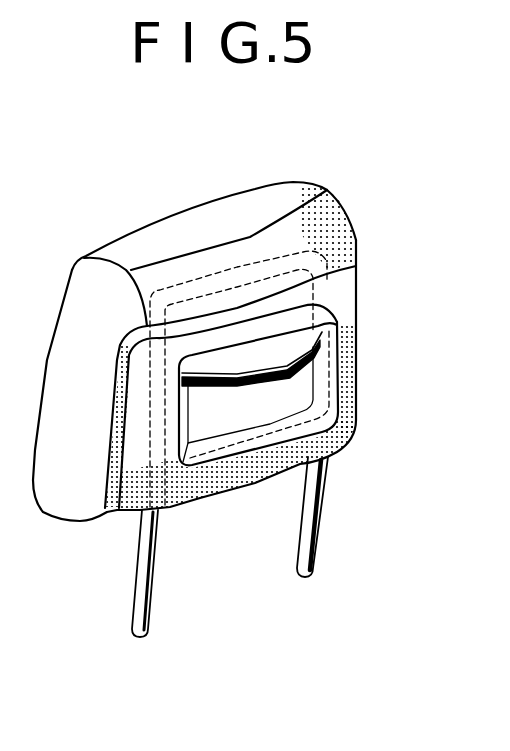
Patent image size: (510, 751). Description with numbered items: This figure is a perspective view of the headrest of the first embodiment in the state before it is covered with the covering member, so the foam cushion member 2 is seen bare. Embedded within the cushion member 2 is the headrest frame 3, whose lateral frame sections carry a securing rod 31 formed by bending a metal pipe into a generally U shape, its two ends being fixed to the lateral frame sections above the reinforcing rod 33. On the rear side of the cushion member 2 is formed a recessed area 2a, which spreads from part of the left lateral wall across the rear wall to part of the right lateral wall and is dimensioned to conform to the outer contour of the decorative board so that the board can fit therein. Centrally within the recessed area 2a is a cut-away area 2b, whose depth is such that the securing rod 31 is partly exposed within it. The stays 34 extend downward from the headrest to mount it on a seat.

The foam cushion member 2 is at (111, 250).
The headrest frame 3 is at (357, 238).
The recessed area 2a is at (293, 315).
The cut-away area 2b is at (283, 401).
The securing rod 31 is at (290, 380).
The reinforcing rod 33 is at (240, 473).
The stays 34 is at (140, 587).